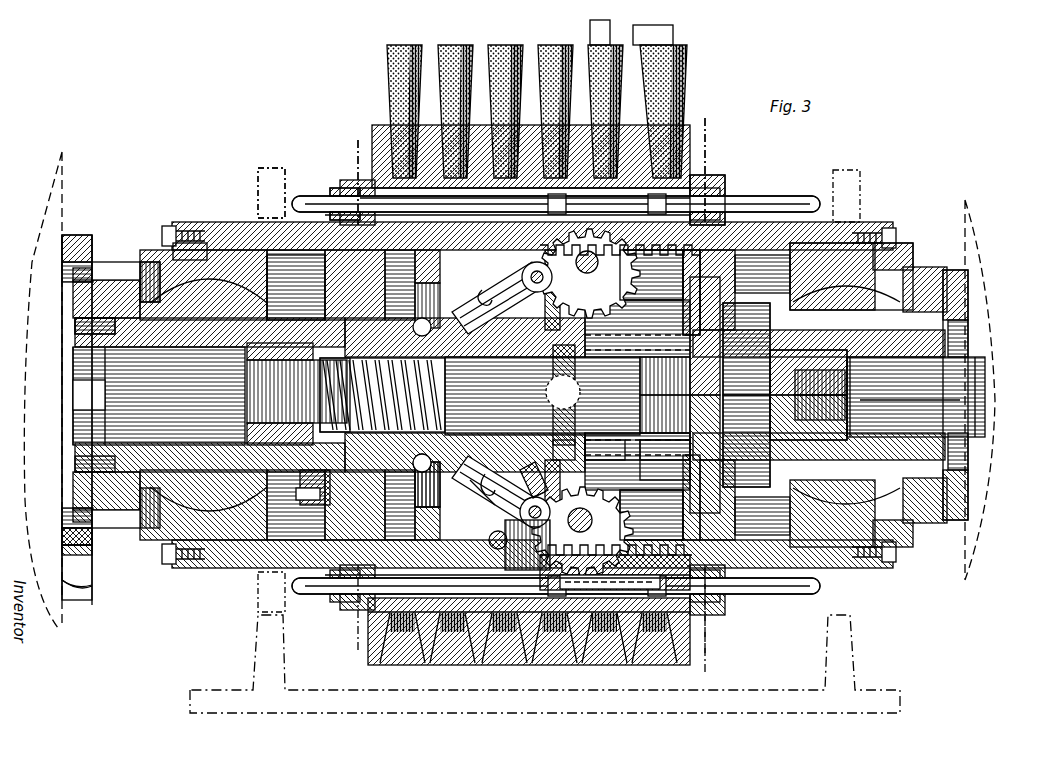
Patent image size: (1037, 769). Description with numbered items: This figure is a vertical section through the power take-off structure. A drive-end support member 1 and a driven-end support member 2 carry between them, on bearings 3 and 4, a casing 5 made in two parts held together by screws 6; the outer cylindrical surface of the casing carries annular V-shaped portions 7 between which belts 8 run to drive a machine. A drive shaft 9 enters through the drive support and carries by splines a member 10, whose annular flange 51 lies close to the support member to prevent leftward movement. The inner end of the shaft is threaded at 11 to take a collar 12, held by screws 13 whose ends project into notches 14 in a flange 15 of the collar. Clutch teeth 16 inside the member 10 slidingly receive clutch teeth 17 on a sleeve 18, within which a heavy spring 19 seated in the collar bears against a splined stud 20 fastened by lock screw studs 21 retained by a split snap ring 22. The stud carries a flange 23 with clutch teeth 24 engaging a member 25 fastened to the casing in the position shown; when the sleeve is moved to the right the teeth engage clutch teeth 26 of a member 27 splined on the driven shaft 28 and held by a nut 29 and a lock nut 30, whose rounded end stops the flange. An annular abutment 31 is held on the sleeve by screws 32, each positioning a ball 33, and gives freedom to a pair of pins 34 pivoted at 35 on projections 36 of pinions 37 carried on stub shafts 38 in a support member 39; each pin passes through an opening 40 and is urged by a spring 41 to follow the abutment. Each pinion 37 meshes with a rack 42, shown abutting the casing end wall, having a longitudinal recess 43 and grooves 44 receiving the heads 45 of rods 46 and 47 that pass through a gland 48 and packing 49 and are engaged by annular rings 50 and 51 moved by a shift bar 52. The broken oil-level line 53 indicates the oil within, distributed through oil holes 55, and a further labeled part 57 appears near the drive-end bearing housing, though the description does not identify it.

The support member 1 is at (92, 235).
The support member 2 is at (948, 268).
The bearing 3 is at (140, 270).
The bearing 4 is at (895, 270).
The casing 5 is at (705, 118).
The screws 6 is at (628, 33).
The annular V-shaped portions 7 is at (628, 35).
The belts 8 is at (430, 45).
The drive shaft 9 is at (115, 418).
The member 10 is at (75, 325).
The threaded portion 11 is at (300, 490).
The collar 12 is at (305, 500).
The screws 13 is at (290, 258).
The notches 14 is at (340, 470).
The flange 15 is at (390, 470).
The clutch teeth 16 is at (422, 510).
The clutch teeth 17 is at (300, 250).
The sleeve 18 is at (580, 436).
The spring 19 is at (452, 388).
The splined stud 20 is at (610, 432).
The lock screw studs 21 is at (600, 345).
The split snap ring 22 is at (580, 452).
The flange 23 is at (690, 462).
The clutch teeth 24 is at (665, 470).
The member 25 is at (688, 332).
The clutch teeth 26 is at (760, 490).
The member 27 is at (780, 490).
The driven shaft 28 is at (975, 355).
The nut 29 is at (862, 378).
The lock nut 30 is at (855, 420).
The annular abutment 31 is at (482, 486).
The screws 32 is at (420, 475).
The ball 33 is at (535, 393).
The pins 34 is at (520, 262).
The pivot 35 is at (495, 544).
The projection 36 is at (552, 502).
The pinion 37 is at (615, 488).
The stub shaft 38 is at (605, 520).
The support member 39 is at (505, 560).
The opening 40 is at (520, 492).
The spring 41 is at (490, 508).
The rack 42 is at (648, 552).
The longitudinal recess 43 is at (700, 180).
The grooves 44 is at (480, 663).
The heads 45 is at (640, 584).
The rod 46 is at (320, 196).
The rod 47 is at (805, 200).
The gland 48 is at (332, 188).
The packing 49 is at (340, 180).
The annular ring 50 is at (272, 168).
The annular ring 51 is at (860, 210).
The shift bar 52 is at (398, 719).
The oil-level line 53 is at (342, 395).
The oil holes 55 is at (660, 495).
The cap 57 is at (172, 248).